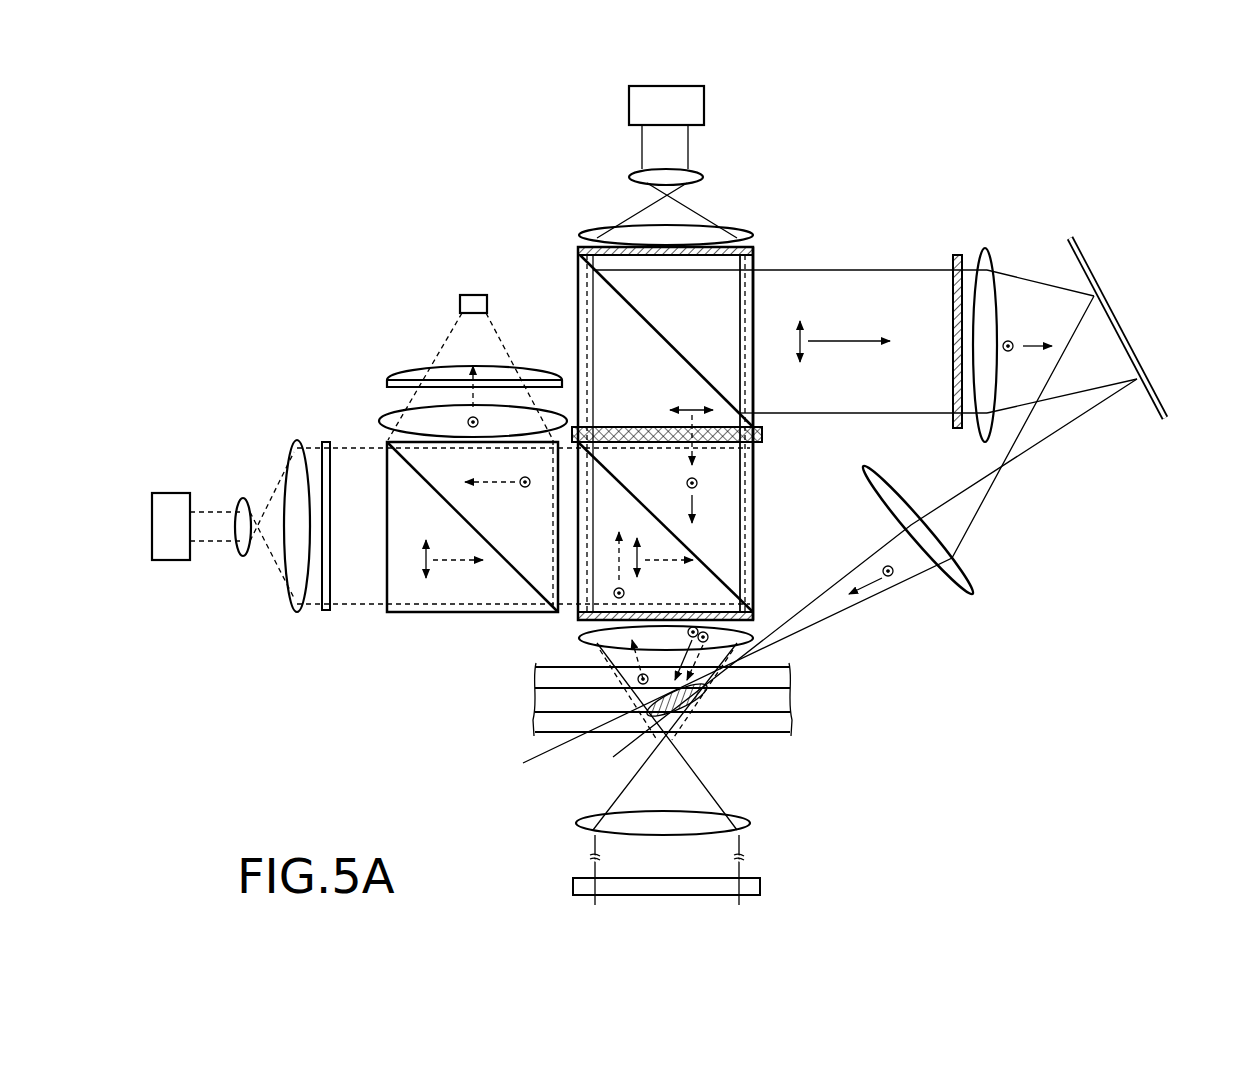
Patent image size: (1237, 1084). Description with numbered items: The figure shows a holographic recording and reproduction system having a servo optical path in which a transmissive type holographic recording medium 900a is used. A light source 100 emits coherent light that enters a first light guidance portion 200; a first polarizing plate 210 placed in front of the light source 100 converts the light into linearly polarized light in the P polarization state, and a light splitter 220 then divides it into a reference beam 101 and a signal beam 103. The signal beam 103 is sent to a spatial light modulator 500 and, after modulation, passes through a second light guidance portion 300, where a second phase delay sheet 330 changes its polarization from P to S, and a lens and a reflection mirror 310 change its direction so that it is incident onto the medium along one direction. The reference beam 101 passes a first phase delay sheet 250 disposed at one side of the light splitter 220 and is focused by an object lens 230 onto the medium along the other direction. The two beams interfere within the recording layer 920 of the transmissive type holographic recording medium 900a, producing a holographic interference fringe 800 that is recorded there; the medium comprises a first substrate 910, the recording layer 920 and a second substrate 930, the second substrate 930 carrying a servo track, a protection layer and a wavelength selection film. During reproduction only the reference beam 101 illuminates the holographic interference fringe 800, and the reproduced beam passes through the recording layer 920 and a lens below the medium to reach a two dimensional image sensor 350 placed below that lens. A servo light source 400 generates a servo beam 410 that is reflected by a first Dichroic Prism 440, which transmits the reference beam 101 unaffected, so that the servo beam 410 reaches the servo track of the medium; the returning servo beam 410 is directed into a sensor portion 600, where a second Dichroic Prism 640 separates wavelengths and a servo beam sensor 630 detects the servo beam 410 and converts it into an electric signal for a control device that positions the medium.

The light source 100 is at (718, 142).
The reference beam 101 is at (740, 468).
The signal beam 103 is at (912, 278).
The first light guidance portion 200 is at (488, 255).
The first polarizing plate 210 is at (583, 252).
The light splitter 220 is at (580, 275).
The object lens 230 is at (580, 638).
The first phase delay sheet 250 is at (754, 615).
The second light guidance portion 300 is at (1023, 238).
The reflection mirror 310 is at (1112, 293).
The second phase delay sheet 330 is at (960, 428).
The two dimensional image sensor 350 is at (760, 887).
The servo light source 400 is at (236, 467).
The servo beam 410 is at (362, 465).
The first Dichroic Prism 440 is at (754, 505).
The spatial light modulator 500 is at (762, 433).
The sensor portion 600 is at (367, 335).
The servo beam sensor 630 is at (460, 303).
The second Dichroic Prism 640 is at (435, 612).
The holographic interference fringe 800 is at (685, 722).
The transmissive type holographic recording medium 900a is at (816, 731).
The first substrate 910 is at (775, 677).
The recording layer 920 is at (777, 700).
The second substrate 930 is at (767, 723).